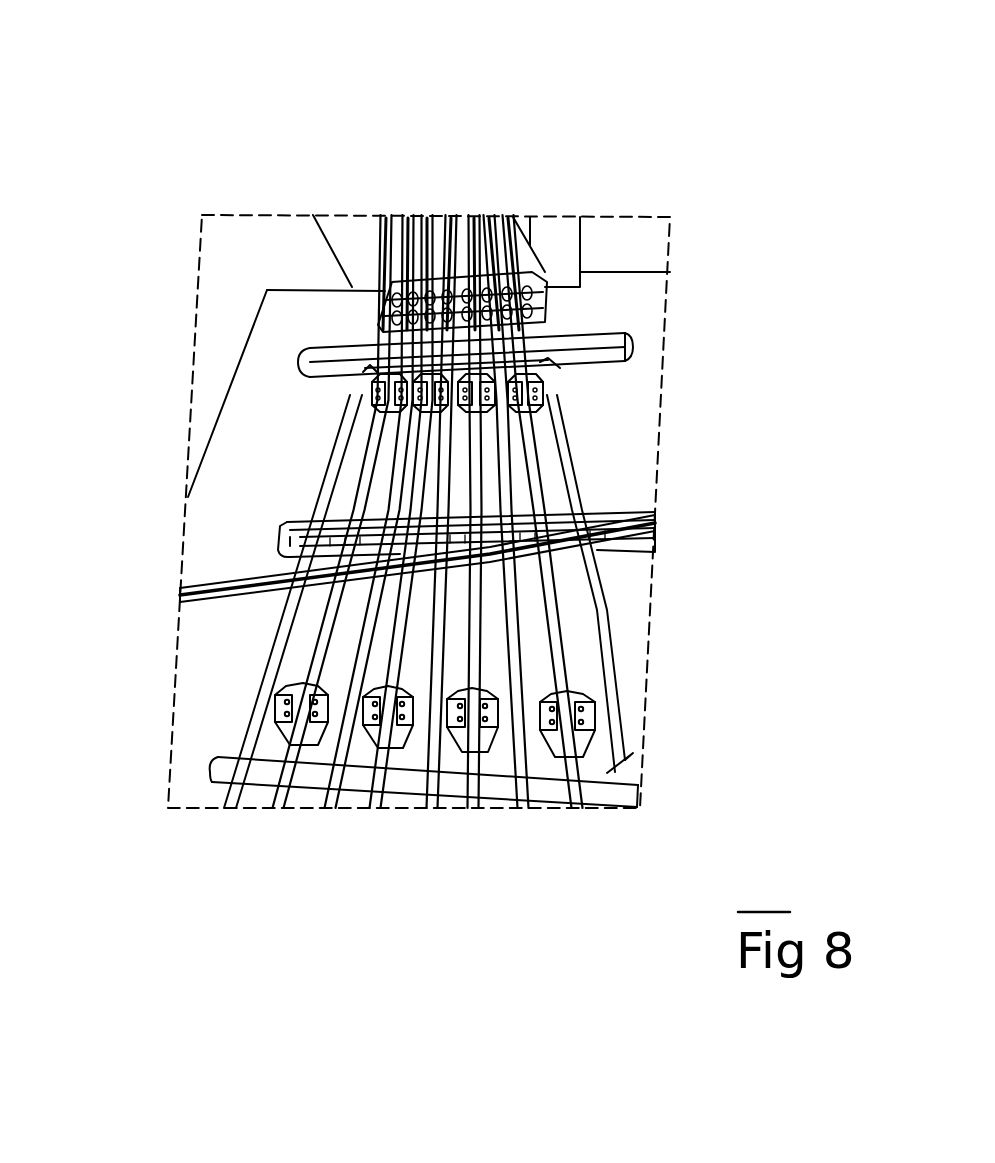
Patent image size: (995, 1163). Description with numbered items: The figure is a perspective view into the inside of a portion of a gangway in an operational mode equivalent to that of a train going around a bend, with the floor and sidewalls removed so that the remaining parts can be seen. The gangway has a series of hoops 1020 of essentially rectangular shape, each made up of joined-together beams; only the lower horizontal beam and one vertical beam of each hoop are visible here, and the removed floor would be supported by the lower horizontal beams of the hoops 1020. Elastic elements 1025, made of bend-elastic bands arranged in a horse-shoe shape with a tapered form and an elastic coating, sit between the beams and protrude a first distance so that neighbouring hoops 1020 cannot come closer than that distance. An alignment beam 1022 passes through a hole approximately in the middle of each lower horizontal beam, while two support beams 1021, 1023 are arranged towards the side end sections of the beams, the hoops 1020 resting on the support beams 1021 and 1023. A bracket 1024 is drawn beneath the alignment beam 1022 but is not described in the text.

The hoops 1020 is at (410, 215).
The support beam 1021 is at (613, 342).
The alignment beam 1022 is at (643, 548).
The support beam 1023 is at (630, 795).
The bracket 1024 is at (350, 553).
The elastic elements 1025 is at (387, 330).